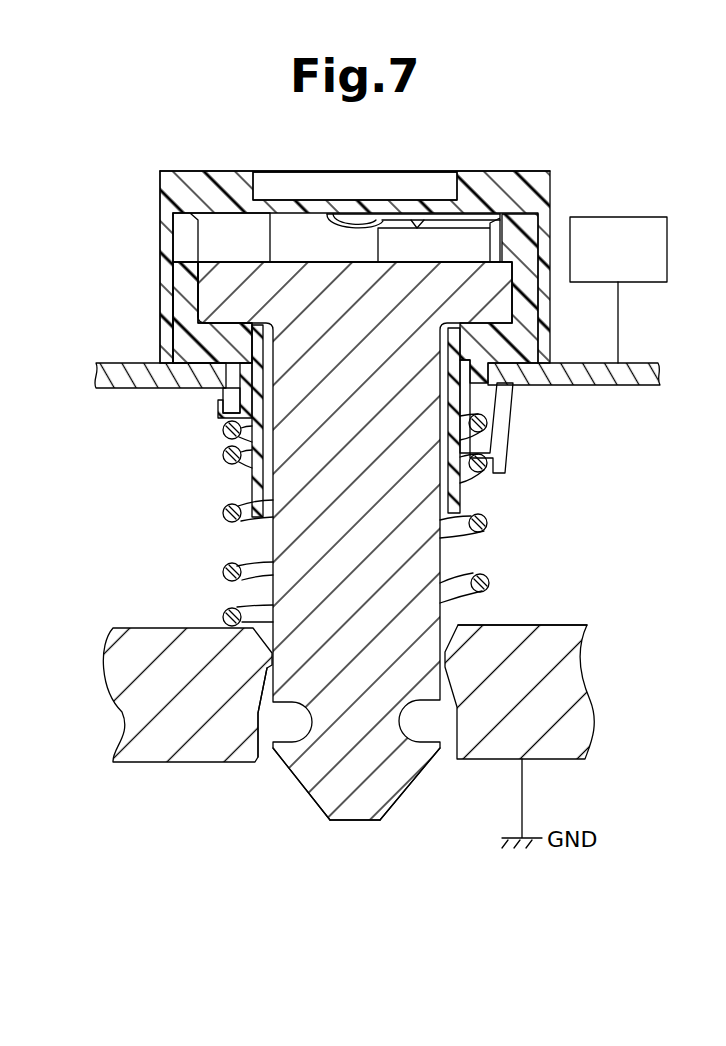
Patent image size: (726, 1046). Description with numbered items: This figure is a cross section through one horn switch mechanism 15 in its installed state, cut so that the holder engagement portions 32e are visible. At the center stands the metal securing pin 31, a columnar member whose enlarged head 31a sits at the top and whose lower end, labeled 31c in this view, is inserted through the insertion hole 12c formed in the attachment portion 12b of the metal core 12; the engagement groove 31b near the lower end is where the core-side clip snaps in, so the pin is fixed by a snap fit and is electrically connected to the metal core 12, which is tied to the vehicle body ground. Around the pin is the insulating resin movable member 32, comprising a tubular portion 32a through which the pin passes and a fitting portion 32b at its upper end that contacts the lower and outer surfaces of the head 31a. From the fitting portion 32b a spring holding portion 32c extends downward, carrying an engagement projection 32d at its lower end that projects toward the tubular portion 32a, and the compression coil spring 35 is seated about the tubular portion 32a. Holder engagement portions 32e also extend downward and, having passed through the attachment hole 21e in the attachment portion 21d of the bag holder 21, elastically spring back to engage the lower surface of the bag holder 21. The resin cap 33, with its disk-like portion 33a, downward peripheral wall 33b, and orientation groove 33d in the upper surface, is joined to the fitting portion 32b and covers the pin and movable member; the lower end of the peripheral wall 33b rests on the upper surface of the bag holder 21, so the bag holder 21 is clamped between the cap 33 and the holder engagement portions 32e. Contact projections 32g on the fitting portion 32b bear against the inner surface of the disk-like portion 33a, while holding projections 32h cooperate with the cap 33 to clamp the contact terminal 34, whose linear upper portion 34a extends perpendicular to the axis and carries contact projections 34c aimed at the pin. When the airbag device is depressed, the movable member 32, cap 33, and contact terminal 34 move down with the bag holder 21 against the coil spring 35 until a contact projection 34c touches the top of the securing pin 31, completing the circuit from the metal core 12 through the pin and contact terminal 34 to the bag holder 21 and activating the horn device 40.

The horn switch mechanism 15 is at (582, 88).
The cap 33 is at (515, 169).
The disk-like portion 33a is at (200, 178).
The peripheral wall 33b is at (160, 228).
The groove 33d is at (255, 195).
The movable member 32 is at (513, 320).
The tubular portion 32a is at (250, 477).
The fitting portion 32b is at (185, 330).
The spring holding portion 32c is at (510, 430).
The engagement projection 32d is at (495, 473).
The holder engagement portion 32e is at (220, 410).
The contact projection 32g is at (263, 246).
The holding projection 32h is at (382, 243).
The contact terminal 34 is at (440, 214).
The upper portion 34a is at (400, 216).
The contact projection 34c is at (347, 216).
The securing pin 31 is at (445, 560).
The head 31a is at (208, 290).
The engagement groove 31b is at (418, 750).
The bottom end of pin 31c is at (353, 822).
The compression coil spring 35 is at (230, 517).
The bag holder 21 is at (630, 387).
The attachment portion 21d is at (112, 385).
The attachment hole 21e is at (224, 396).
The metal core 12 is at (573, 663).
The attachment portion 12b is at (558, 630).
The insertion hole 12c is at (263, 750).
The horn device 40 is at (620, 216).